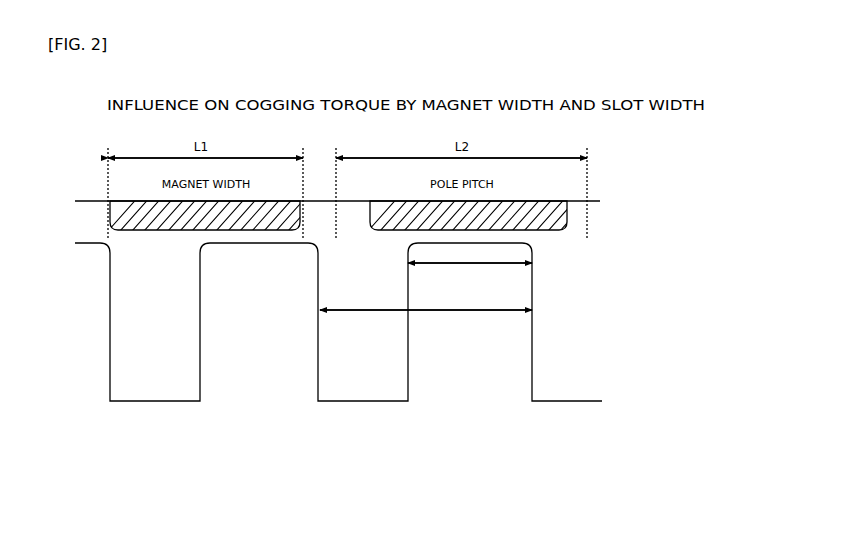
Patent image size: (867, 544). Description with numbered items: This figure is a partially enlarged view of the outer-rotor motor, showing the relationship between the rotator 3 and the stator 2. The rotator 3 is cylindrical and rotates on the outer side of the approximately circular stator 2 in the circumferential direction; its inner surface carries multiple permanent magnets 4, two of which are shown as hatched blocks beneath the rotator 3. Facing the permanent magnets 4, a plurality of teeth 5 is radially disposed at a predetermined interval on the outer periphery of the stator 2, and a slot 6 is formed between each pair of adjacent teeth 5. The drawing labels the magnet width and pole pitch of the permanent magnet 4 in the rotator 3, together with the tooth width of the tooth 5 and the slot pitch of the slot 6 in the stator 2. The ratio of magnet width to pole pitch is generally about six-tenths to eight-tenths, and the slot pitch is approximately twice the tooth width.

The stator 2 is at (338, 375).
The rotator 3 is at (553, 179).
The permanent magnet 4 is at (125, 233).
The tooth 5 is at (222, 300).
The slot 6 is at (157, 385).